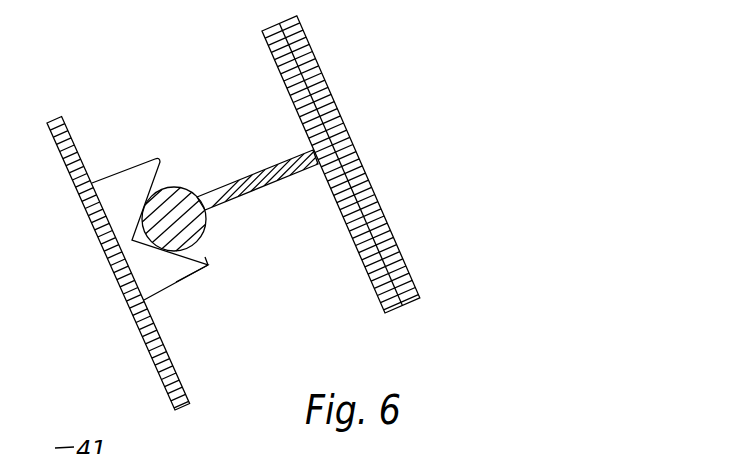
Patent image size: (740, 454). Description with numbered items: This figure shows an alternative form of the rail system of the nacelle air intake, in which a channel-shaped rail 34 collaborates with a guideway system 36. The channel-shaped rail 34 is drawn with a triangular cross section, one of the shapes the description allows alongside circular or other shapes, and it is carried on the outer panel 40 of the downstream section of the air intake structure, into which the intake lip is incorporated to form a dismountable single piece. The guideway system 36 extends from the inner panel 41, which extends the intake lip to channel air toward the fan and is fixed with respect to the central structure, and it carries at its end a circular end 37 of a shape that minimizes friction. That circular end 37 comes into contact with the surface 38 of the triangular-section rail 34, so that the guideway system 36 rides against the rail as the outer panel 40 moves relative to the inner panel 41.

The channel-shaped rail 34 is at (152, 280).
The guideway system 36 is at (248, 177).
The circular end 37 is at (181, 194).
The surface 38 is at (205, 257).
The outer panel 40 is at (108, 266).
The inner panel 41 is at (352, 102).